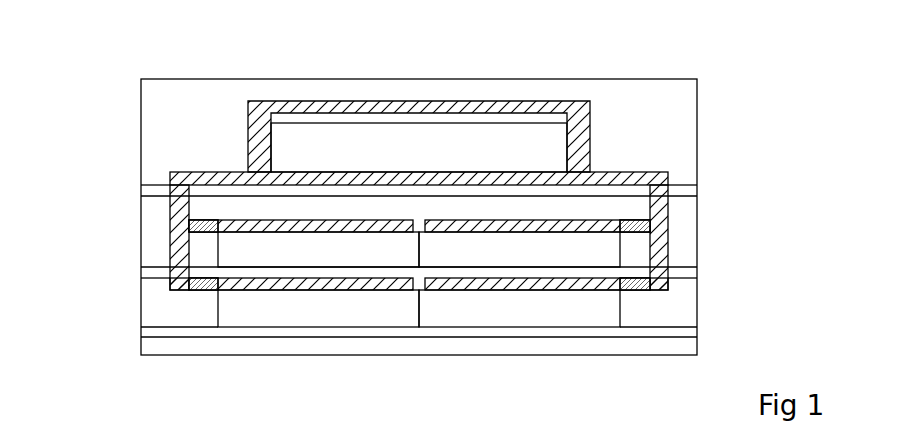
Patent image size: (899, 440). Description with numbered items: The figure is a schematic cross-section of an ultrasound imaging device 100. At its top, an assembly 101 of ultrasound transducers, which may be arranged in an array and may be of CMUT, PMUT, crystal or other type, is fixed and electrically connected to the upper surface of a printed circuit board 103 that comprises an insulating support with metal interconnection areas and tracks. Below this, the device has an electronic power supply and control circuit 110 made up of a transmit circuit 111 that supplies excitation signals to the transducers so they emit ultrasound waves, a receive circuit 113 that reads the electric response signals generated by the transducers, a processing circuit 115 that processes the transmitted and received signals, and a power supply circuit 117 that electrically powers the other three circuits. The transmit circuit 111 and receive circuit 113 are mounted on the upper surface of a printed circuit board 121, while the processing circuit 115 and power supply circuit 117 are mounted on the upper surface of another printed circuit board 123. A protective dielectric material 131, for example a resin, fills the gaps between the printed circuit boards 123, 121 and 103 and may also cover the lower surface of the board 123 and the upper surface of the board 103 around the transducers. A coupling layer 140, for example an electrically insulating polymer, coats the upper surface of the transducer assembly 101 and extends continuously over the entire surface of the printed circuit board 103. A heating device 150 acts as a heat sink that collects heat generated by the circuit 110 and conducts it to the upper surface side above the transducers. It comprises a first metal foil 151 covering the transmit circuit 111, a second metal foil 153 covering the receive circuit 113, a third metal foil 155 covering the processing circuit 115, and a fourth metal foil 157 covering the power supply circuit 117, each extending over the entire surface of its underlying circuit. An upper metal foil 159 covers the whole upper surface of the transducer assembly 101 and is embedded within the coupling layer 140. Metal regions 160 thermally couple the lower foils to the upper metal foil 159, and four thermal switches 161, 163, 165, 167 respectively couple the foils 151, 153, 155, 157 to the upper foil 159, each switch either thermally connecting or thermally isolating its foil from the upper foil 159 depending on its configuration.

The ultrasound imaging device 100 is at (138, 51).
The assembly of ultrasound transducers 101 is at (543, 150).
The printed circuit board 103 is at (685, 190).
The electronic power supply and control circuit 110 is at (395, 292).
The transmit circuit 111 is at (236, 246).
The receive circuit 113 is at (605, 252).
The processing circuit 115 is at (212, 300).
The power supply circuit 117 is at (603, 308).
The printed circuit board 121 is at (686, 272).
The printed circuit board 123 is at (688, 332).
The protective dielectric material 131 is at (152, 207).
The coupling layer 140 is at (682, 98).
The heating device 150 is at (509, 94).
The first metal foil 151 is at (257, 232).
The second metal foil 153 is at (460, 232).
The third metal foil 155 is at (370, 290).
The fourth metal foil 157 is at (582, 290).
The upper metal foil 159 is at (478, 105).
The metal regions 160 is at (200, 172).
The thermal switch 161 is at (170, 226).
The thermal switch 163 is at (660, 224).
The thermal switch 165 is at (185, 287).
The thermal switch 167 is at (645, 284).